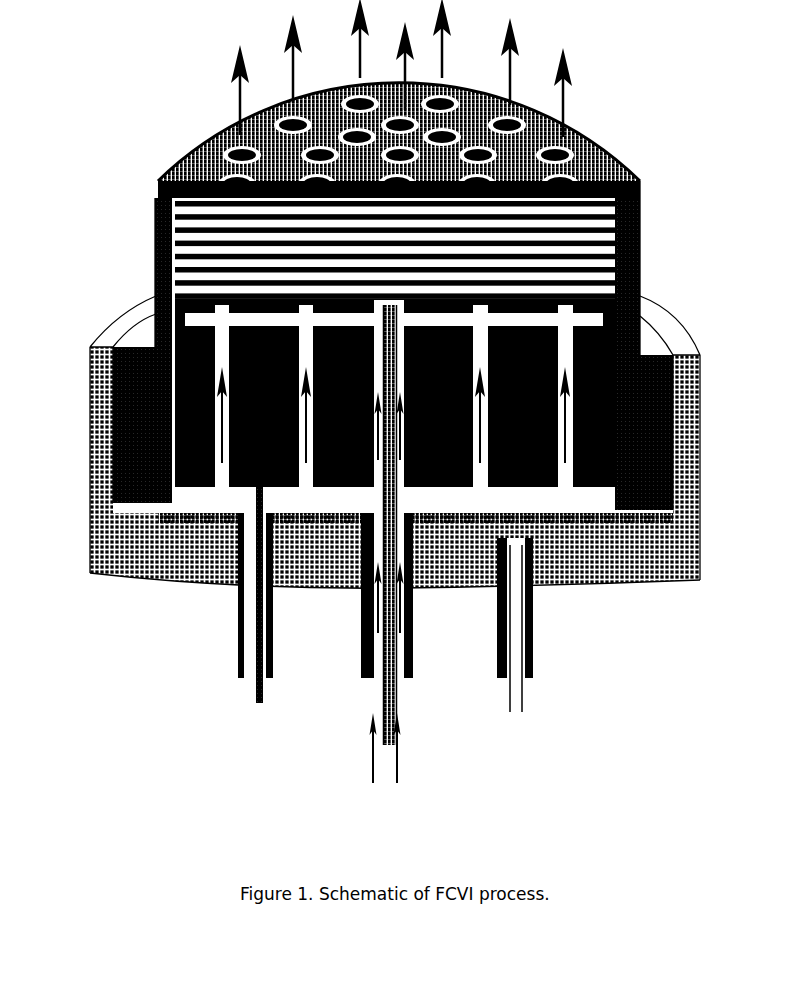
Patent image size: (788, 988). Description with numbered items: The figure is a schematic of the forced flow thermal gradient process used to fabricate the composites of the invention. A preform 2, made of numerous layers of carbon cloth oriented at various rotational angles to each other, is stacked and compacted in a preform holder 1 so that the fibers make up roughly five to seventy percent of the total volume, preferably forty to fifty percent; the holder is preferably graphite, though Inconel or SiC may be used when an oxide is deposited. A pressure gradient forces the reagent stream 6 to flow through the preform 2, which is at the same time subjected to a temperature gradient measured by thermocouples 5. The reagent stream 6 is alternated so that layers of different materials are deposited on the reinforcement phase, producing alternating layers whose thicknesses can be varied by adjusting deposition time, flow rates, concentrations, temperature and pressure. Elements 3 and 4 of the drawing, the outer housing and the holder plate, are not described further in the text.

The preform holder 1 is at (648, 232).
The preform 2 is at (580, 263).
The water-cooled housing 3 is at (724, 402).
The preform holder 4 is at (553, 502).
The thermocouples 5 is at (228, 693).
The reagent stream 6 is at (387, 572).